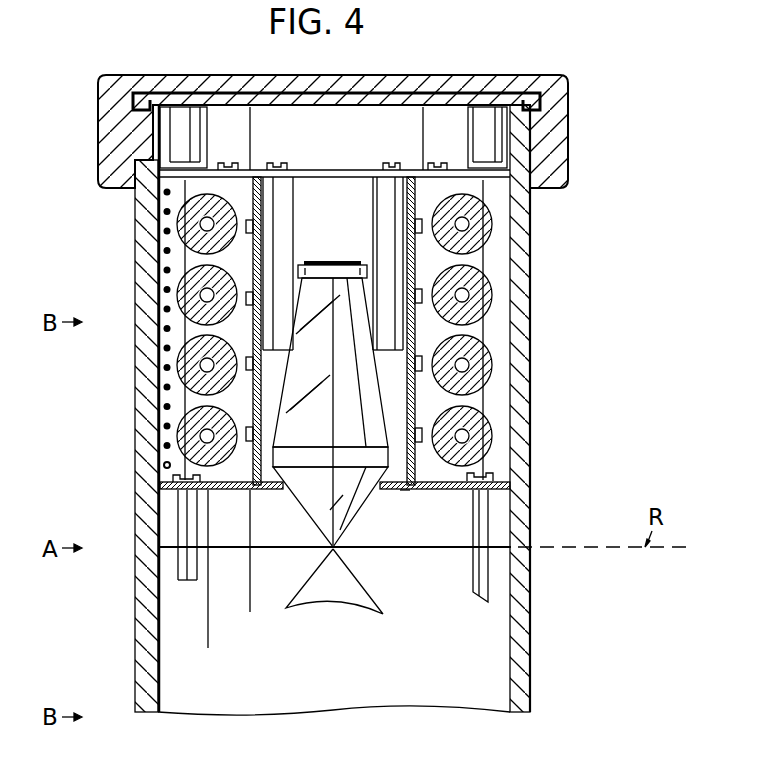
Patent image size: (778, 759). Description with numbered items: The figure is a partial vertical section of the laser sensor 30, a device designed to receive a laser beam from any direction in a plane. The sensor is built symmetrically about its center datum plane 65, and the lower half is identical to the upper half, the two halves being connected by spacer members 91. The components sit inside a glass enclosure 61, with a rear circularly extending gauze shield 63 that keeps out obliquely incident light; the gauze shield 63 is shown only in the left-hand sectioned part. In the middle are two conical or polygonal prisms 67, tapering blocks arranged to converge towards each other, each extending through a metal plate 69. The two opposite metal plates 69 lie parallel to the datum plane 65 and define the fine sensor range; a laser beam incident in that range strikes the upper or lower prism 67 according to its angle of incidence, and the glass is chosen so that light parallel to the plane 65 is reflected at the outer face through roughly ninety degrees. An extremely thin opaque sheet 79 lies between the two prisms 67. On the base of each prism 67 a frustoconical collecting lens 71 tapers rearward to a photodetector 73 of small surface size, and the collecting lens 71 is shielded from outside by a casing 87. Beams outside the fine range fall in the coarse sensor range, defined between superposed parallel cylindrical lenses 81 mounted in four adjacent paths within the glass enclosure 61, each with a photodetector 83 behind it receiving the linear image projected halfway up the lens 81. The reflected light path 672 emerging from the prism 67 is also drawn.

The laser sensor 30 is at (136, 362).
The glass enclosure 61 is at (522, 143).
The gauze shield 63 is at (166, 268).
The center datum plane 65 is at (575, 547).
The conical prism 67 is at (322, 513).
The metal plate 69 is at (511, 481).
The collecting lens 71 is at (368, 397).
The photodetector 73 is at (362, 238).
The opaque sheet 79 is at (158, 557).
The cylindrical lens 81 is at (178, 217).
The photodetector 83 is at (252, 218).
The casing 87 is at (404, 492).
The spacer member 91 is at (479, 515).
The reflected light beam 672 is at (303, 604).